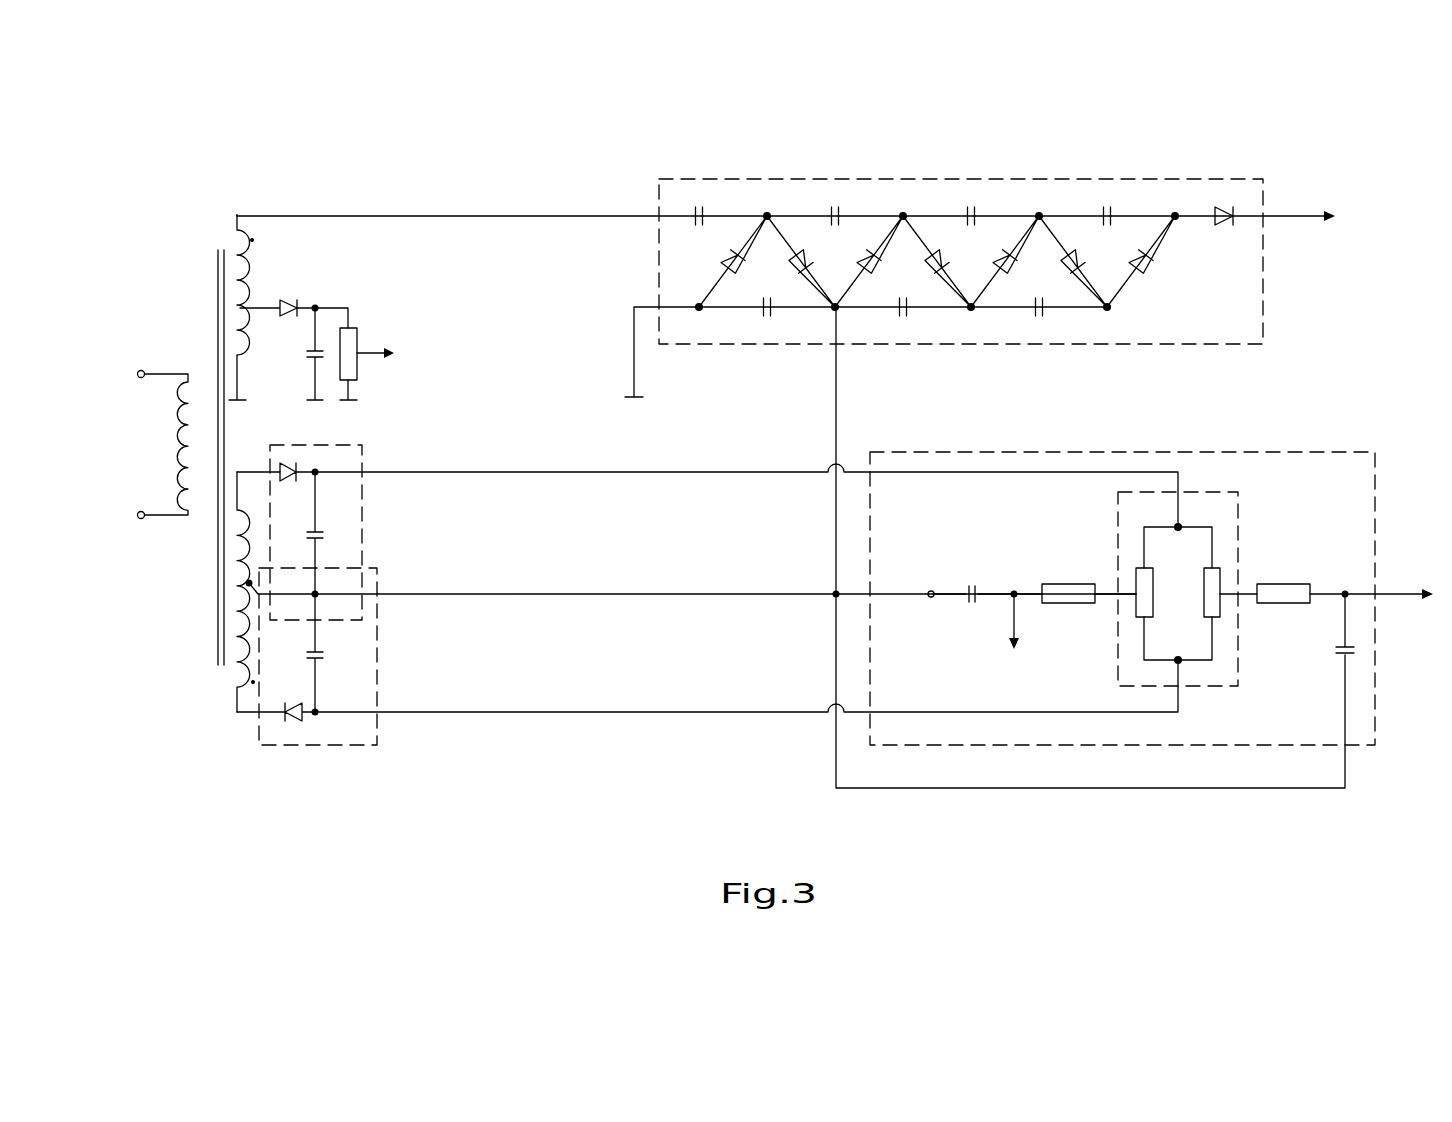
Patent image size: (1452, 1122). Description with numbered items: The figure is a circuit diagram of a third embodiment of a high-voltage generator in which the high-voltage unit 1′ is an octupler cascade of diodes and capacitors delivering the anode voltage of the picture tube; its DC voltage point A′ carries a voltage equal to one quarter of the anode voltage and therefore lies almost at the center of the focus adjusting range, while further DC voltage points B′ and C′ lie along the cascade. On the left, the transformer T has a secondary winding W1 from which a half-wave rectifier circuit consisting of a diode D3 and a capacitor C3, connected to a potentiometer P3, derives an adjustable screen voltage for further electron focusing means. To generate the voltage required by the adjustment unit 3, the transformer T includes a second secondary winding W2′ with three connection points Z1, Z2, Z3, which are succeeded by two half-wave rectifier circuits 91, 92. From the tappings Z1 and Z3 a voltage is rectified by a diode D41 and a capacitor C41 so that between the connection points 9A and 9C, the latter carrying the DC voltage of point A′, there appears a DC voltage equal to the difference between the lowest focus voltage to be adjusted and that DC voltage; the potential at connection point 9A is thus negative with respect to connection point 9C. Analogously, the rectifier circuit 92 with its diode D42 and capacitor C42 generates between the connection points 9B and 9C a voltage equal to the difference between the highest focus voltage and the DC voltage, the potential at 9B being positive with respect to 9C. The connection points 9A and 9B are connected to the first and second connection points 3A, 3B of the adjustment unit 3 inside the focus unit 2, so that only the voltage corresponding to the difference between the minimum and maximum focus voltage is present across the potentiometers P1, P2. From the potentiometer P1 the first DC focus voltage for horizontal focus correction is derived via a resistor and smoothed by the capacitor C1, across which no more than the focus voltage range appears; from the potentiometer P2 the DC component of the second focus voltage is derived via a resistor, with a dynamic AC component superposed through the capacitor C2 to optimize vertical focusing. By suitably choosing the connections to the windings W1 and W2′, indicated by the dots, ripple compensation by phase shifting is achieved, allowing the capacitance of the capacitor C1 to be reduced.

The transformer T is at (197, 547).
The secondary winding W1 is at (247, 280).
The secondary winding W2′ is at (247, 677).
The diode D3 is at (290, 302).
The capacitor C3 is at (312, 358).
The potentiometer P3 is at (363, 327).
The half-wave rectifier circuit 91 is at (320, 748).
The half-wave rectifier circuit 92 is at (308, 445).
The connection point Z1 is at (267, 713).
The connection point Z2 is at (253, 470).
The connection point Z3 is at (253, 596).
The diode D41 is at (297, 707).
The diode D42 is at (287, 478).
The capacitor C41 is at (323, 657).
The capacitor C42 is at (338, 522).
The connection point 9A is at (318, 714).
The connection point 9B is at (318, 469).
The connection point 9C is at (318, 592).
The high-voltage unit 1′ is at (1088, 178).
The DC voltage point A′ is at (833, 312).
The DC voltage point B′ is at (970, 310).
The DC voltage point C′ is at (1106, 310).
The focus unit 2 is at (1377, 487).
The adjustment unit 3 is at (1240, 553).
The first connection point 3A is at (1182, 661).
The second connection point 3B is at (1182, 526).
The potentiometer P1 is at (1202, 600).
The potentiometer P2 is at (1155, 594).
The capacitor C1 is at (1352, 650).
The capacitor C2 is at (970, 603).